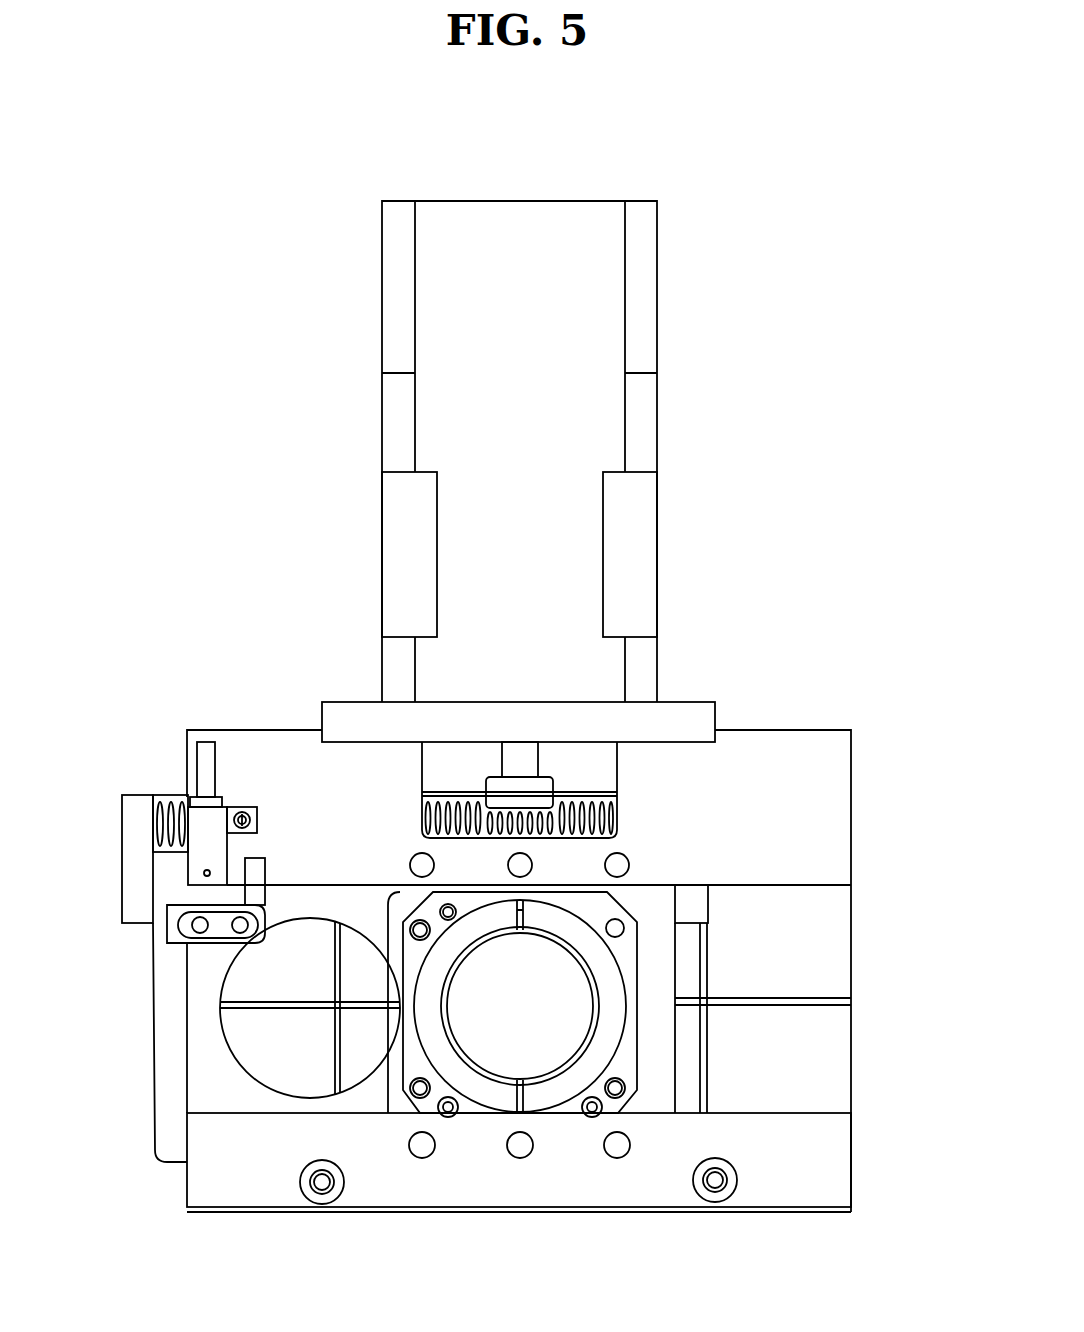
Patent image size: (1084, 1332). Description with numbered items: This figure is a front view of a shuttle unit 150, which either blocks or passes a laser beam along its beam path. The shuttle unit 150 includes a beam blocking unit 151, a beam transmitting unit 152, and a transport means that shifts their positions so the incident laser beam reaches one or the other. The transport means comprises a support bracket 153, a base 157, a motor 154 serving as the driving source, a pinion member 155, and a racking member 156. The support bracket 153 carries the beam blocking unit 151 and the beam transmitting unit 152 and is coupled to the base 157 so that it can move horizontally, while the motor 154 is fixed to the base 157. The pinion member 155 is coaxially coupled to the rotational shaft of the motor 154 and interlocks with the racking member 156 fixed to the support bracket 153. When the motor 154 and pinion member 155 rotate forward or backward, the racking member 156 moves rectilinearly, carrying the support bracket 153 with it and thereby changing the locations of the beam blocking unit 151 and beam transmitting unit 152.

The shuttle unit 150 is at (274, 316).
The beam blocking unit 151 is at (543, 1040).
The beam transmitting unit 152 is at (287, 1052).
The support bracket 153 is at (178, 1031).
The motor 154 is at (562, 296).
The pinion member 155 is at (556, 808).
The racking member 156 is at (423, 793).
The base 157 is at (818, 831).